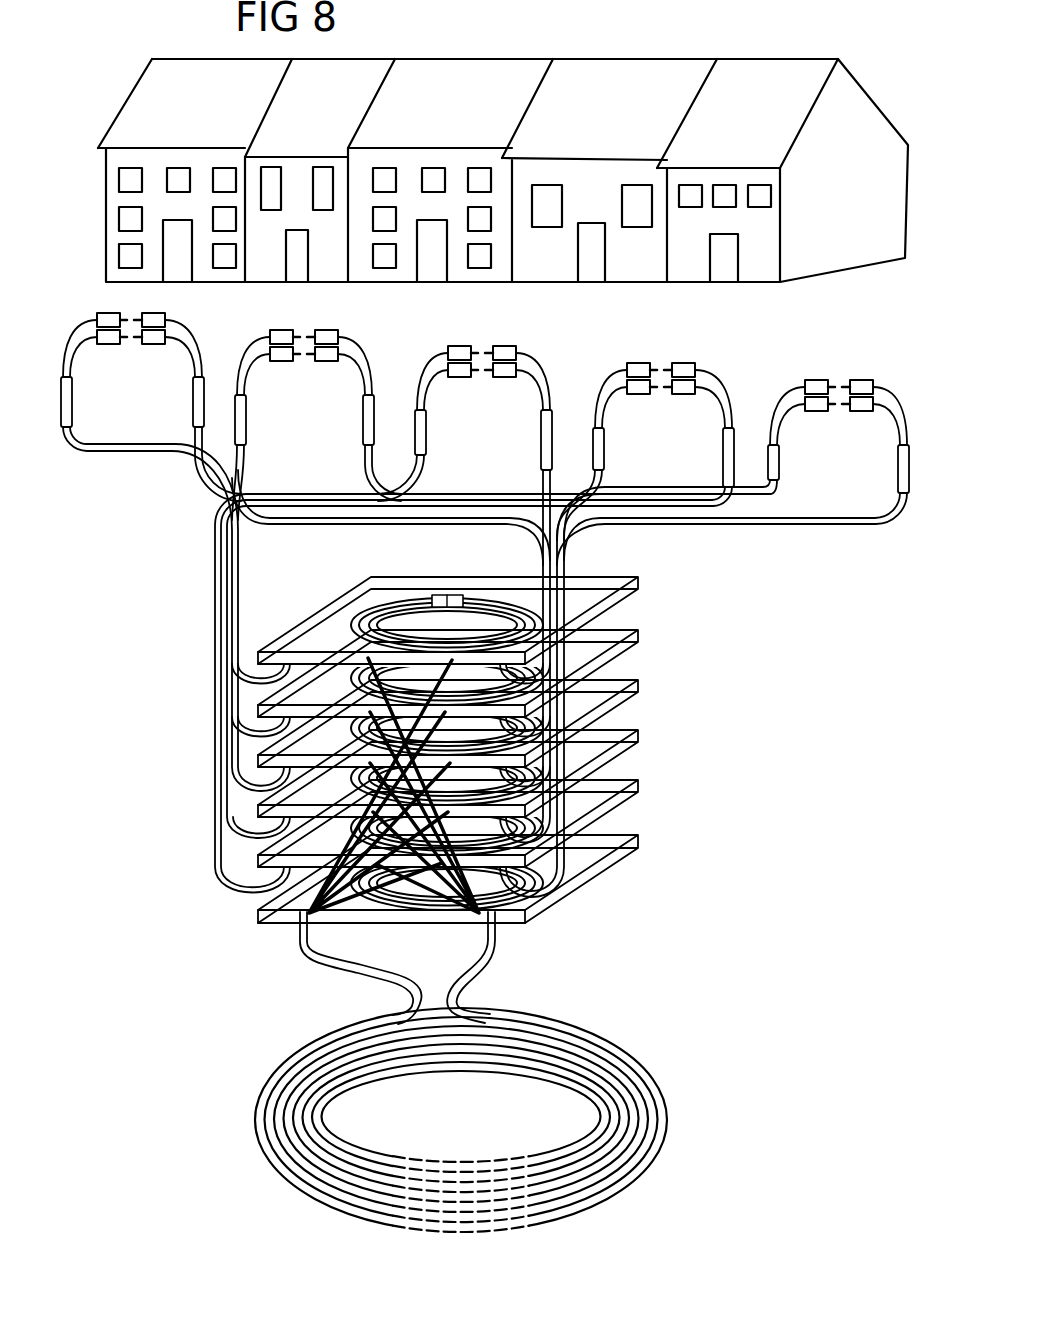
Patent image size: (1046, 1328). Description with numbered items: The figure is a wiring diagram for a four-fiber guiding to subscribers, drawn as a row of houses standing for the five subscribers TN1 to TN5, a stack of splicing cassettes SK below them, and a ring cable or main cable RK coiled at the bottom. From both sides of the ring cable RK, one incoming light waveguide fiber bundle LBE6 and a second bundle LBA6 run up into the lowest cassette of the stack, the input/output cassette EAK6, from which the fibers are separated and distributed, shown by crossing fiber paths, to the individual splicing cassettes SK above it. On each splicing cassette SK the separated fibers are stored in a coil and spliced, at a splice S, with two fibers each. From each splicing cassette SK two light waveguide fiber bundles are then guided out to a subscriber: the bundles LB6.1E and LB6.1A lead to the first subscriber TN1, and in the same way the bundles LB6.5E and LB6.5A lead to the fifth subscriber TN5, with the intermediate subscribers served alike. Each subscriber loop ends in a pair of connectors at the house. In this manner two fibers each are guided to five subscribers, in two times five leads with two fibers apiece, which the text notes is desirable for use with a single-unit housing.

The subscriber TN1 is at (150, 344).
The subscriber TN5 is at (860, 412).
The light waveguide fiber bundle LB6.1E is at (93, 452).
The light waveguide fiber bundle LB6.1A is at (205, 498).
The light waveguide fiber bundle LB6.5E is at (762, 500).
The light waveguide fiber bundle LB6.5A is at (877, 527).
The splice S is at (445, 594).
The splicing cassettes SK is at (638, 580).
The input/output cassette EAK6 is at (580, 878).
The incoming light waveguide fiber bundle LBE6 is at (353, 960).
The light waveguide fiber bundle LBA6 is at (467, 963).
The ring cable RK is at (667, 1120).